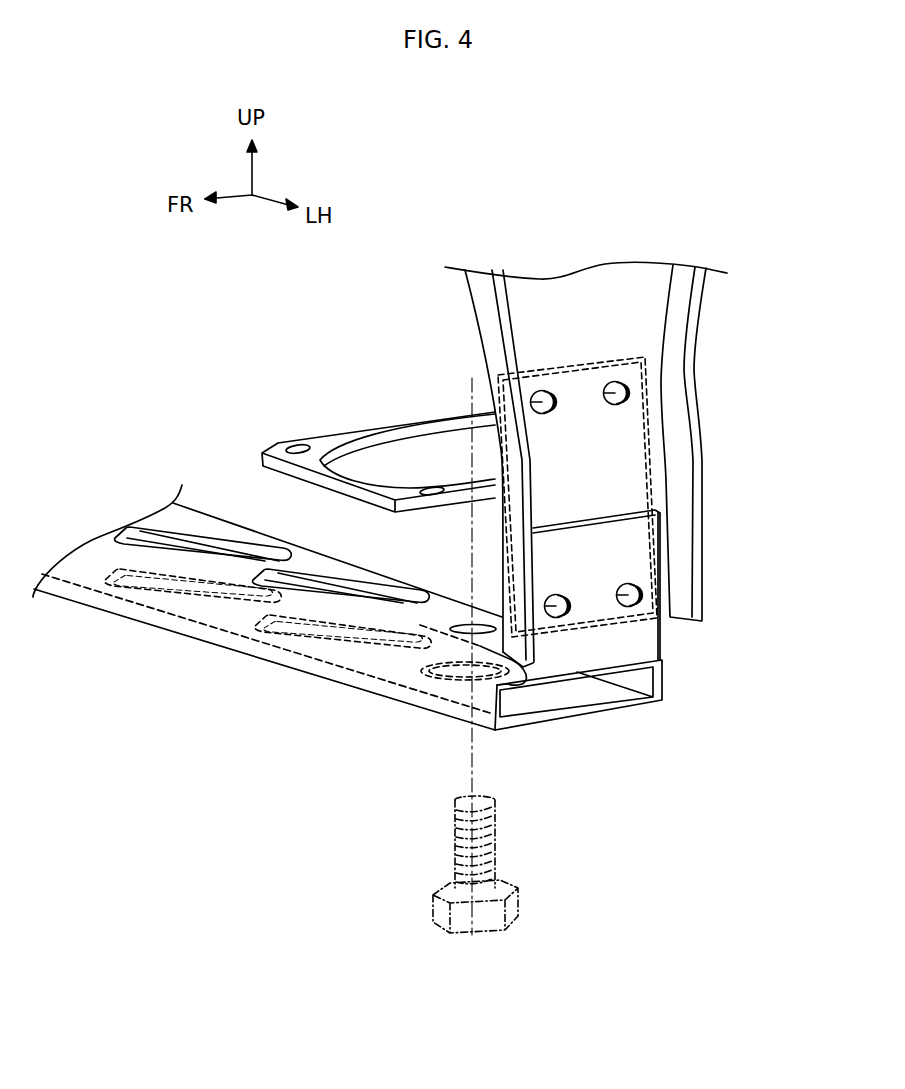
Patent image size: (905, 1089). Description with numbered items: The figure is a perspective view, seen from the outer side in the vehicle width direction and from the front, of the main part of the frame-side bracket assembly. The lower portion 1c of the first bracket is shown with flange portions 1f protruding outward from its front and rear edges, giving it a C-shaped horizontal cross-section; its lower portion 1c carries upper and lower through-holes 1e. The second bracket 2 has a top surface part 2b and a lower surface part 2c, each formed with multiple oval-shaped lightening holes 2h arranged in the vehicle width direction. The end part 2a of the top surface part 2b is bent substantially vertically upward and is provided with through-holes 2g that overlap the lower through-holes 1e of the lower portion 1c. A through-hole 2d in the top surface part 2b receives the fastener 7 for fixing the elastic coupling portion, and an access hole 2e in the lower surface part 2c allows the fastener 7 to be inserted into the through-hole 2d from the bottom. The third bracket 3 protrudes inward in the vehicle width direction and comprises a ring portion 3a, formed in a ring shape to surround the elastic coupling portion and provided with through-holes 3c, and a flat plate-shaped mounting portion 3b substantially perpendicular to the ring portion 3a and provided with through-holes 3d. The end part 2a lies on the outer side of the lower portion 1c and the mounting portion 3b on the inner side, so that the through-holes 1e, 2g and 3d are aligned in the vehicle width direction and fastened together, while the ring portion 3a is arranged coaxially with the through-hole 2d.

The lower portion 1c is at (657, 464).
The through-holes 1e is at (681, 541).
The flange portions 1f is at (698, 323).
The second bracket 2 is at (279, 607).
The end part 2a is at (606, 571).
The top surface part 2b is at (200, 516).
The lower surface part 2c is at (570, 722).
The through-holes 2d is at (468, 622).
The access holes 2e is at (455, 690).
The through-holes 2g is at (630, 598).
The lightening holes 2h is at (370, 577).
The third bracket 3 is at (378, 412).
The ring portion 3a is at (388, 428).
The mounting portion 3b is at (597, 357).
The through-holes 3c is at (432, 488).
The through-holes 3d is at (681, 541).
The fasteners 7 is at (470, 944).